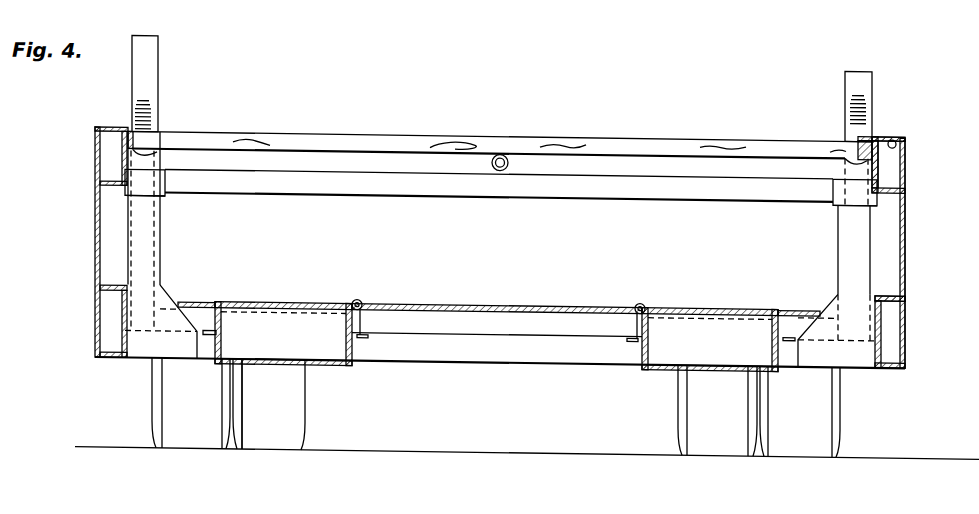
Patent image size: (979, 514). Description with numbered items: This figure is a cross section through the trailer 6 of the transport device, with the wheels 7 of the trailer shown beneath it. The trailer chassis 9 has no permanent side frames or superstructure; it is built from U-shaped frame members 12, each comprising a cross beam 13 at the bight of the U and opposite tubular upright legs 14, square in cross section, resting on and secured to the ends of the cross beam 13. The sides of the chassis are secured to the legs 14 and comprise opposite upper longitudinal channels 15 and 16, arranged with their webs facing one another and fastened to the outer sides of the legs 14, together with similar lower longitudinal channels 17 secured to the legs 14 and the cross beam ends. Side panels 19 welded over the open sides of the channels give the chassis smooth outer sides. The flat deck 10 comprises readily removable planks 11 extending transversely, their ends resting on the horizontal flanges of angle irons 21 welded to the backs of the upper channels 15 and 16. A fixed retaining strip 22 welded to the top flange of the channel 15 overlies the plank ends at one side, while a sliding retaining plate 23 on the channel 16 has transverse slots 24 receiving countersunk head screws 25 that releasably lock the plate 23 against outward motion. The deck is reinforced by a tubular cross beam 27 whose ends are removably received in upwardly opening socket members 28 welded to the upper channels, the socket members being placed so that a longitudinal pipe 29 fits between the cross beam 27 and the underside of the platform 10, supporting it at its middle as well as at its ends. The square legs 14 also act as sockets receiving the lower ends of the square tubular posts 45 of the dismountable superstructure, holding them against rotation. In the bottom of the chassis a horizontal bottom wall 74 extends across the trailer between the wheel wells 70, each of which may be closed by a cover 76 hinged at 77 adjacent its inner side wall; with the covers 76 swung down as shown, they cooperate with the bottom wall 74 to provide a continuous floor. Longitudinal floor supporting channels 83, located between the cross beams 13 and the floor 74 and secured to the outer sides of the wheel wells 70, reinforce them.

The trailer 6 is at (907, 242).
The wheels 7 is at (310, 406).
The chassis 9 is at (903, 292).
The deck 10 is at (398, 119).
The planks 11 is at (440, 130).
The U-shaped frame members 12 is at (190, 231).
The cross beam 13 is at (443, 358).
The tubular upright legs 14 is at (150, 221).
The upper longitudinal channel 15 is at (100, 190).
The upper longitudinal channel 16 is at (902, 183).
The longitudinal channels 17 is at (113, 322).
The side panels 19 is at (93, 258).
The angle irons 21 is at (157, 146).
The retaining strip 22 is at (112, 127).
The retaining plate 23 is at (907, 125).
The slots 24 is at (877, 126).
The countersunk head screws 25 is at (893, 126).
The tubular cross beams 27 is at (583, 192).
The socket members 28 is at (127, 197).
The longitudinal pipe 29 is at (507, 151).
The rear posts 45 is at (150, 61).
The box 70 is at (320, 347).
The bottom wall 74 is at (445, 298).
The cover 76 is at (293, 300).
The hinge 77 is at (358, 296).
The floor supporting channels 83 is at (205, 336).